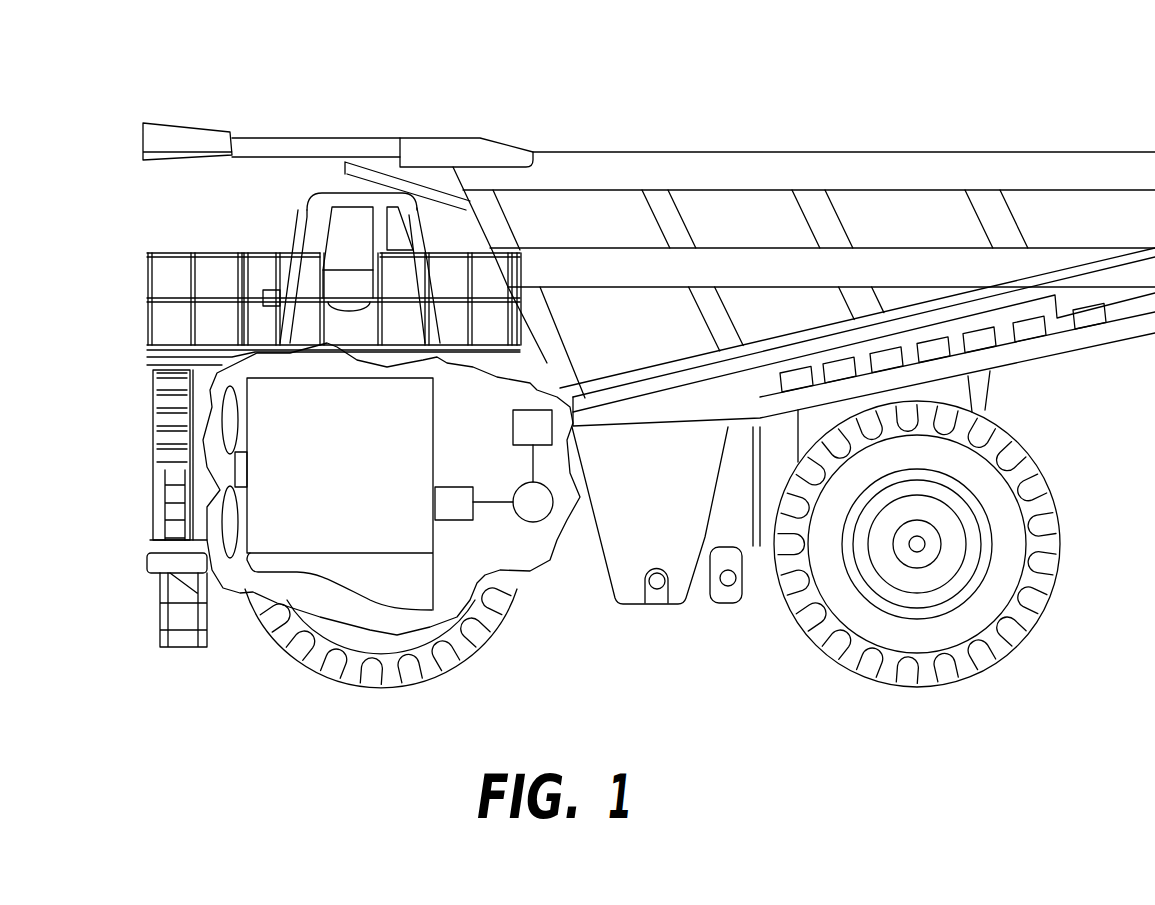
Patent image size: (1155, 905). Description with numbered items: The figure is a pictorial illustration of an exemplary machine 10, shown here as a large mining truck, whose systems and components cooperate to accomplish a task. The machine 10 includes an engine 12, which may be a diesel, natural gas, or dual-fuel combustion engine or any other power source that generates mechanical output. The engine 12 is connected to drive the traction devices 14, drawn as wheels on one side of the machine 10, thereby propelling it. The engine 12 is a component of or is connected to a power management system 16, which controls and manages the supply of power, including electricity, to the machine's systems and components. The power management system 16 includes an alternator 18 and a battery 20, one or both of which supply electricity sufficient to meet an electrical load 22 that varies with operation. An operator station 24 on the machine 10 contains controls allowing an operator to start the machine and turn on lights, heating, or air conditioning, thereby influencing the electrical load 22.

The machine 10 is at (785, 121).
The engine 12 is at (435, 428).
The traction devices 14 is at (506, 619).
The power management system 16 is at (532, 553).
The alternator 18 is at (452, 523).
The battery 20 is at (547, 390).
The electrical load 22 is at (517, 483).
The operator station 24 is at (323, 230).